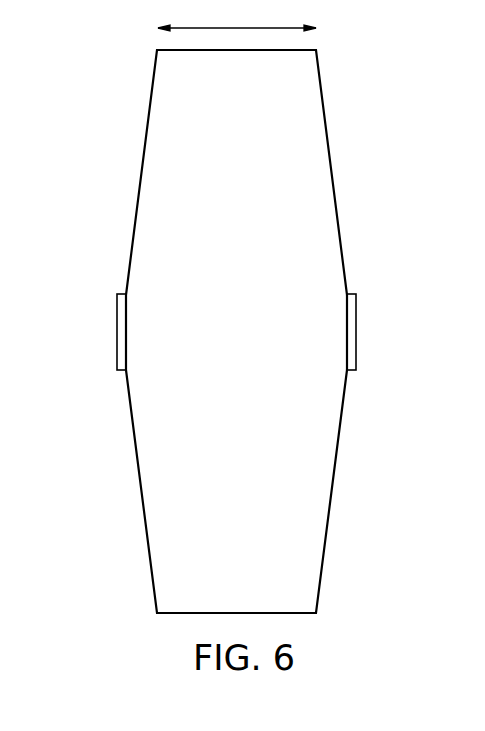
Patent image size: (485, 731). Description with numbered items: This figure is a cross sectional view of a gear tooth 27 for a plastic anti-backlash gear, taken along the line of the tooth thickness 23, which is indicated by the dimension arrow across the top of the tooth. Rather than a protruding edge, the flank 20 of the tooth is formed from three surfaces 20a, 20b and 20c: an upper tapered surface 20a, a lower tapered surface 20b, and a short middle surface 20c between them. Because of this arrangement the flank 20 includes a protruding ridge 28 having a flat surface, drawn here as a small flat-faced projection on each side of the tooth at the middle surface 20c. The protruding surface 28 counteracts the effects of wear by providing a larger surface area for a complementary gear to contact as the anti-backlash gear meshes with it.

The flank 20 is at (282, 331).
The first flank surface 20a is at (330, 160).
The second flank surface 20b is at (333, 498).
The third flank surface 20c is at (357, 312).
The tooth thickness 23 is at (237, 15).
The gear tooth 27 is at (249, 331).
The protruding ridge 28 is at (116, 330).